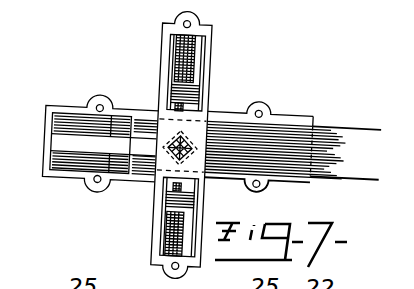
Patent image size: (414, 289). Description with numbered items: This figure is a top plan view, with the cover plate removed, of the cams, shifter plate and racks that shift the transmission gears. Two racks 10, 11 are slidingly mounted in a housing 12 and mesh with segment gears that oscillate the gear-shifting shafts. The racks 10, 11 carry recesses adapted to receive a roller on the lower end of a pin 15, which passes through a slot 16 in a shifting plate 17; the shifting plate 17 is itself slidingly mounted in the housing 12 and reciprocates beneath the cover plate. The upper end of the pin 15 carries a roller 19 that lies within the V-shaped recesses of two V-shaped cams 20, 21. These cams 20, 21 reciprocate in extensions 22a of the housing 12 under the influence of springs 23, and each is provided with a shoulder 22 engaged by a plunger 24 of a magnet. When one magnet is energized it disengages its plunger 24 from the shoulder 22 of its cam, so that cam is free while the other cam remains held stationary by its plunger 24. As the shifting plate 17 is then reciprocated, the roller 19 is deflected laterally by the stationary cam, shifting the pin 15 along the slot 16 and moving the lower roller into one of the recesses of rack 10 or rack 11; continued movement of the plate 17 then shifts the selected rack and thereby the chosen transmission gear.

The rack 10 is at (86, 176).
The rack 11 is at (85, 117).
The housing 12 is at (45, 160).
The pin 15 is at (205, 135).
The slot 16 is at (173, 127).
The shifting plate 17 is at (97, 224).
The roller 19 is at (190, 150).
The V-shaped cam 20 is at (172, 172).
The V-shaped cam 21 is at (196, 122).
The shoulder 22 is at (176, 105).
The extension of the housing 22a is at (163, 43).
The spring 23 is at (172, 241).
The plunger 24 is at (200, 92).